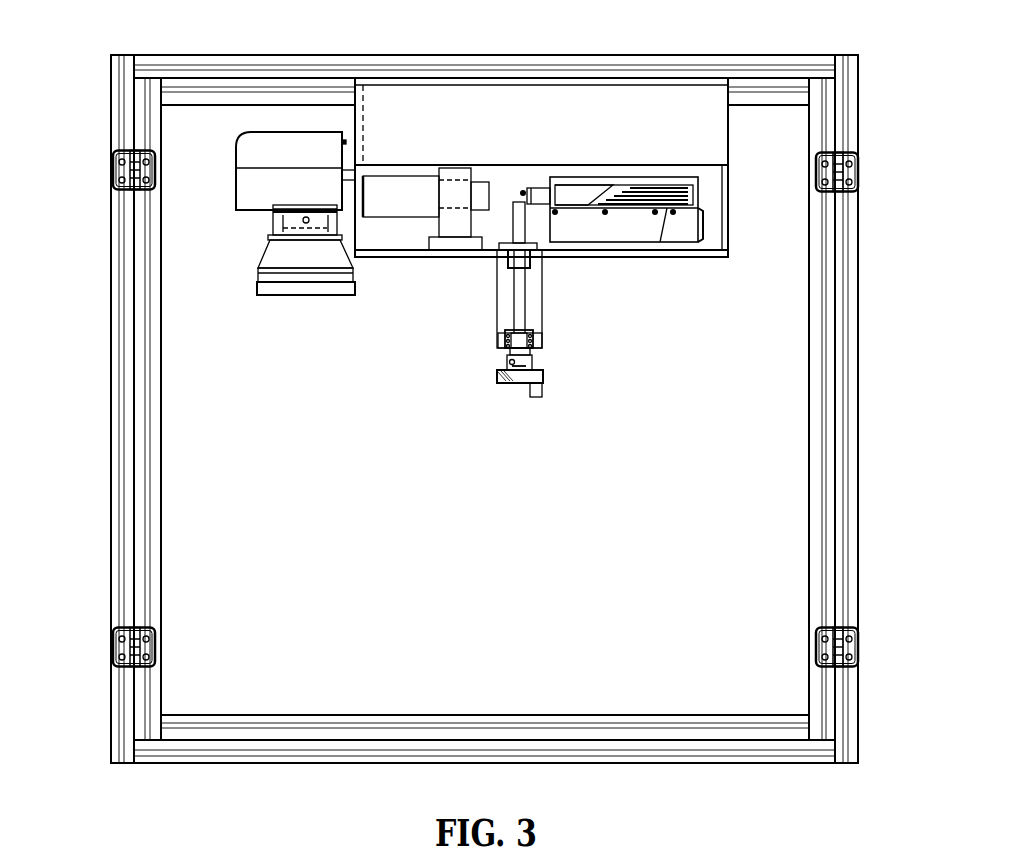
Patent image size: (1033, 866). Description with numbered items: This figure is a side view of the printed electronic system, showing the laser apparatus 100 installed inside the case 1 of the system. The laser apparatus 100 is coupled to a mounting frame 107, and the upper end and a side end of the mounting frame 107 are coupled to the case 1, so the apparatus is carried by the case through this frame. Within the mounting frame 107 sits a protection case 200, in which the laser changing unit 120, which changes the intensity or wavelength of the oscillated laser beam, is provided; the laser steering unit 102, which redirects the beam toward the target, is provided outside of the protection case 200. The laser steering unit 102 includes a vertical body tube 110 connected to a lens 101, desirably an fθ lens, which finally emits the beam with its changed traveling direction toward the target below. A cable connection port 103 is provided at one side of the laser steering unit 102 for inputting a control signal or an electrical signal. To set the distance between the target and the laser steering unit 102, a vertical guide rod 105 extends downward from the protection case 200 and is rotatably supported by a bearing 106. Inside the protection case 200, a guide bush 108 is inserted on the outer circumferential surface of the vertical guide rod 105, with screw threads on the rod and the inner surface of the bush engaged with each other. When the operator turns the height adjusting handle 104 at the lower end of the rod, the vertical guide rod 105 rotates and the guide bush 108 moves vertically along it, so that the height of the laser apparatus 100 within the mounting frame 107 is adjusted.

The case 1 is at (855, 392).
The laser apparatus 100 is at (737, 133).
The lens 101 is at (258, 286).
The laser steering unit 102 is at (297, 142).
The cable connection port 103 is at (650, 230).
The height adjusting handle 104 is at (497, 375).
The vertical guide rod 105 is at (517, 304).
The bearing 106 is at (536, 337).
The mounting frame 107 is at (627, 110).
The guide bush 108 is at (530, 260).
The vertical body tube 110 is at (273, 224).
The laser changing unit 120 is at (410, 185).
The protection case 200 is at (723, 210).